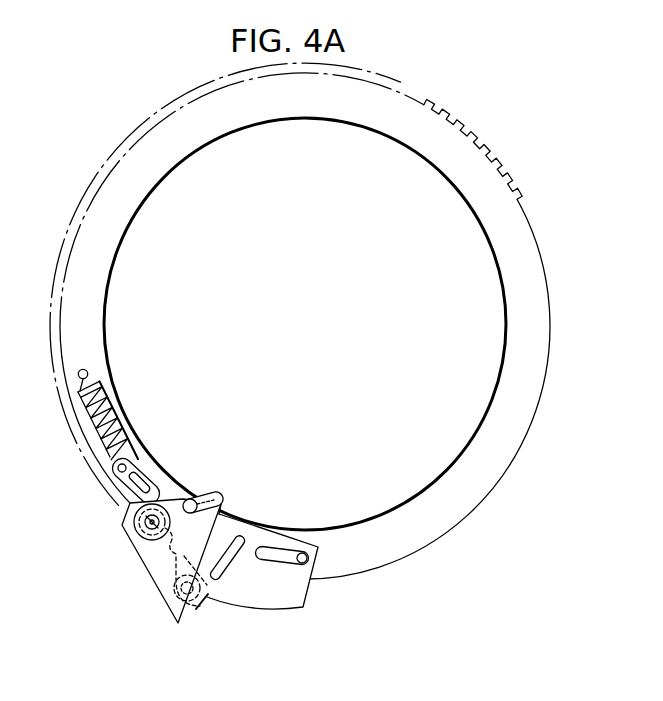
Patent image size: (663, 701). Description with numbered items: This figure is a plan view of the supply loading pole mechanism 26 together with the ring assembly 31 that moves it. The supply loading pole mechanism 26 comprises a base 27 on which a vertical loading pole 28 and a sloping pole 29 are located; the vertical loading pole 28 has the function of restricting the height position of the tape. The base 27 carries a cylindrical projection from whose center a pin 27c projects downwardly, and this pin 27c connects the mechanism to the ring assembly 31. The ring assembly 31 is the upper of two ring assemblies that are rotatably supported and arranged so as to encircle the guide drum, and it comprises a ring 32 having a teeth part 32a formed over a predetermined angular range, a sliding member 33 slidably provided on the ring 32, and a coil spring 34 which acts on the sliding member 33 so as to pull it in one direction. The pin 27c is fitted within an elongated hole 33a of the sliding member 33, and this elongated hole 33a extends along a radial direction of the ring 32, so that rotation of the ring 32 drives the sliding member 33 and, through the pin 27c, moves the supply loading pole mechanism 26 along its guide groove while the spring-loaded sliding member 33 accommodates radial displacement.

The supply loading pole mechanism 26 is at (223, 505).
The base 27 is at (140, 562).
The pin 27c is at (197, 609).
The vertical loading pole 28 is at (133, 530).
The sloping pole 29 is at (198, 497).
The ring assembly 31 is at (126, 126).
The ring 32 is at (533, 247).
The teeth part 32a is at (483, 139).
The sliding member 33 is at (287, 608).
The elongated hole 33a is at (223, 557).
The coil spring 34 is at (105, 405).